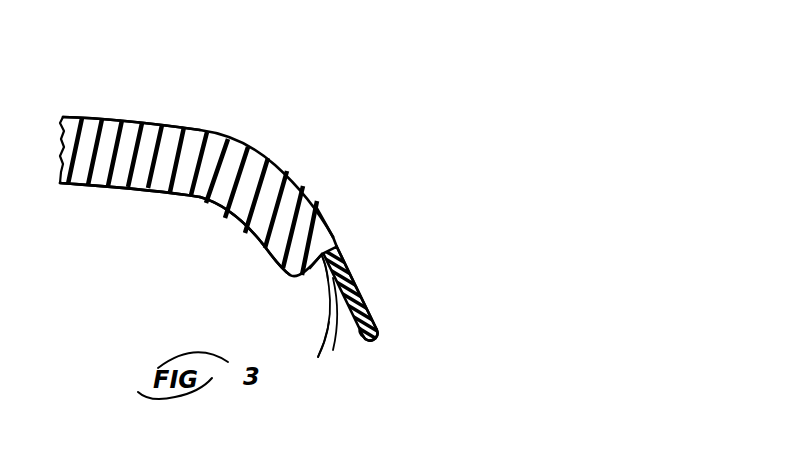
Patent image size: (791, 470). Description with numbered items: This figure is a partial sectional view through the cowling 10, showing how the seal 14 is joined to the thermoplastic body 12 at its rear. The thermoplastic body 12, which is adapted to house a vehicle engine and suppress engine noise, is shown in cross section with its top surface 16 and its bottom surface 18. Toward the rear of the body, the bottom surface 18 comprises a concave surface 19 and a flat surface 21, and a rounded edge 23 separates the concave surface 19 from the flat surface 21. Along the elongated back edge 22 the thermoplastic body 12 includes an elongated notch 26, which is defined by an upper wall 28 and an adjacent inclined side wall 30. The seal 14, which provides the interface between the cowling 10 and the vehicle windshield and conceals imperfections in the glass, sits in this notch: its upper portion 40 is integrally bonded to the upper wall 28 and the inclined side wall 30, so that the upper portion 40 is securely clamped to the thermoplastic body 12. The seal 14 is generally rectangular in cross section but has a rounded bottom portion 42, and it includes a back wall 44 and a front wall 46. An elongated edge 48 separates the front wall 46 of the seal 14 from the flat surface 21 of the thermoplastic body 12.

The cowling 10 is at (353, 147).
The thermoplastic body 12 is at (237, 128).
The seal 14 is at (345, 335).
The top surface 16 is at (132, 120).
The bottom surface 18 is at (135, 188).
The concave surface 19 is at (223, 208).
The flat surface 21 is at (322, 277).
The elongated back edge 22 is at (360, 250).
The rounded edge 23 is at (291, 273).
The elongated notch 26 is at (331, 229).
The upper wall 28 is at (329, 250).
The inclined side wall 30 is at (320, 257).
The upper portion 40 is at (349, 273).
The rounded bottom portion 42 is at (370, 335).
The back wall 44 is at (361, 300).
The front wall 46 is at (362, 340).
The elongated edge 48 is at (318, 357).